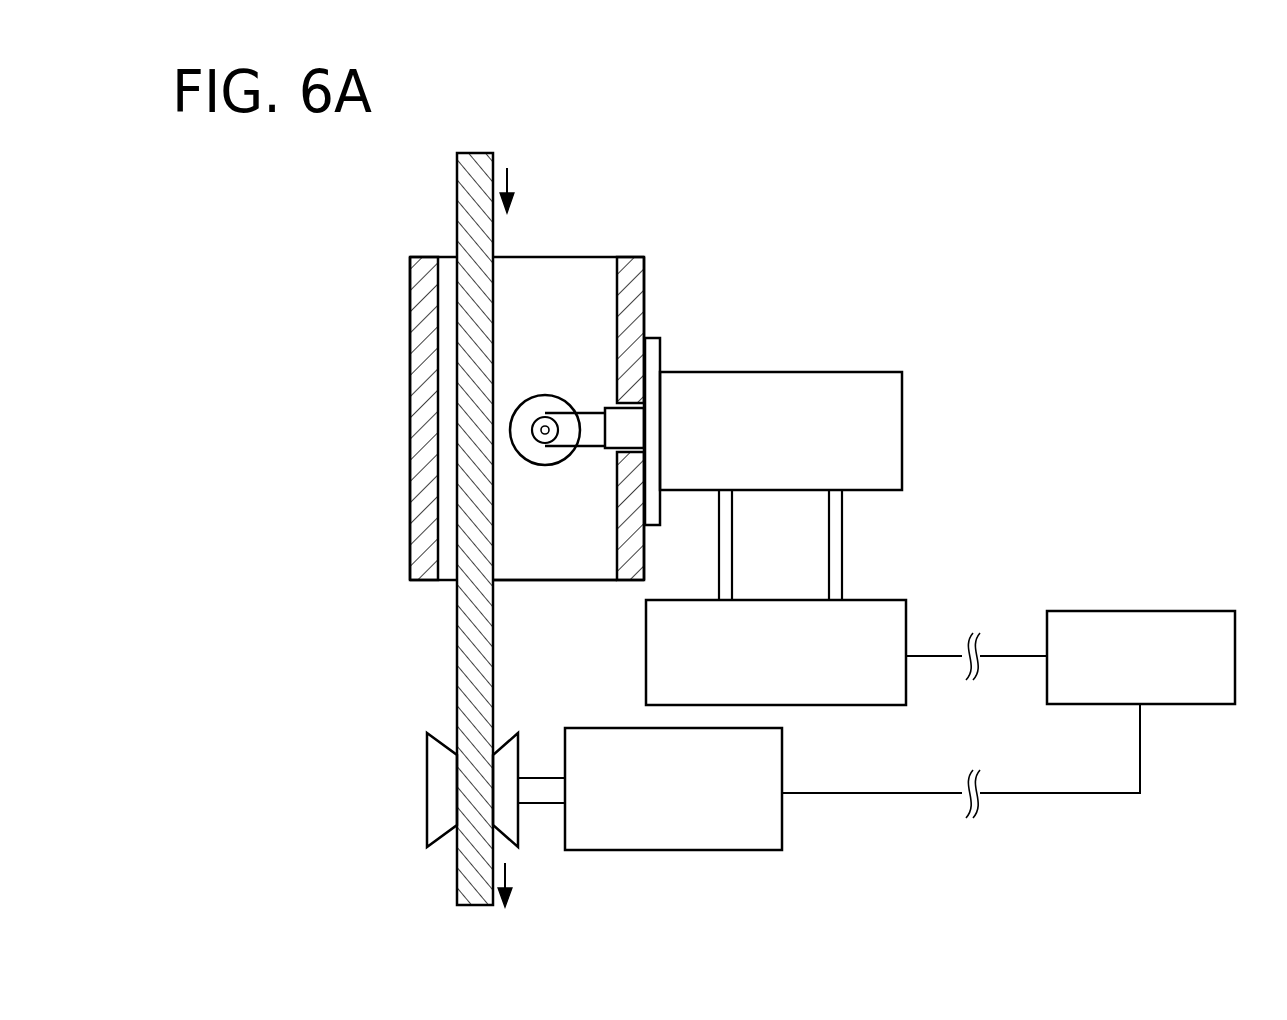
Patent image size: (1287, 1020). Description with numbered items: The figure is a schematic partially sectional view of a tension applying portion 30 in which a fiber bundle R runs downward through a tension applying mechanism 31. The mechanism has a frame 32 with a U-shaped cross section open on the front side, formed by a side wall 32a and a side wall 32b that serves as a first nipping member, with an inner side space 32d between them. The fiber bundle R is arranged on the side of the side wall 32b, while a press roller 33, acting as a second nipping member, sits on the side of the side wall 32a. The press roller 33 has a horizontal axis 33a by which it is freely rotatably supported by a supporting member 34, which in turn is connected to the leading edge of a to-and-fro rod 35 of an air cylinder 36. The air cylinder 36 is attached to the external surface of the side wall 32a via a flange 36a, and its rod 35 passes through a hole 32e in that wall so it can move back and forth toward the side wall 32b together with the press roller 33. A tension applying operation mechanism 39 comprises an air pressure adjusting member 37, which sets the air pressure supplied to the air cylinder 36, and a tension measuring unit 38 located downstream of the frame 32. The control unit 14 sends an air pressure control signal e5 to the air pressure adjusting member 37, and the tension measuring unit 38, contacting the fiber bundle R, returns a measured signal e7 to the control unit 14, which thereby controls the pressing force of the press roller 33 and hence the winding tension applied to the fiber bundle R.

The fiber bundle R is at (457, 220).
The tension applying portion 30 is at (1002, 254).
The tension applying mechanism 31 is at (663, 217).
The frame 32 is at (571, 250).
The side wall 32a is at (647, 280).
The side wall 32b is at (420, 417).
The inner side space 32d is at (569, 566).
The hole 32e is at (645, 418).
The press roller 33 is at (545, 455).
The axis 33a is at (545, 422).
The supporting member 34 is at (588, 412).
The to-and-fro rod 35 is at (627, 431).
The air cylinder 36 is at (848, 393).
The flange 36a is at (653, 355).
The air pressure adjusting member 37 is at (875, 600).
The tension measuring unit 38 is at (703, 850).
The tension applying operation mechanism 39 is at (976, 484).
The control unit 14 is at (1203, 611).
The air pressure control signal e5 is at (1005, 653).
The measured signal e7 is at (888, 793).